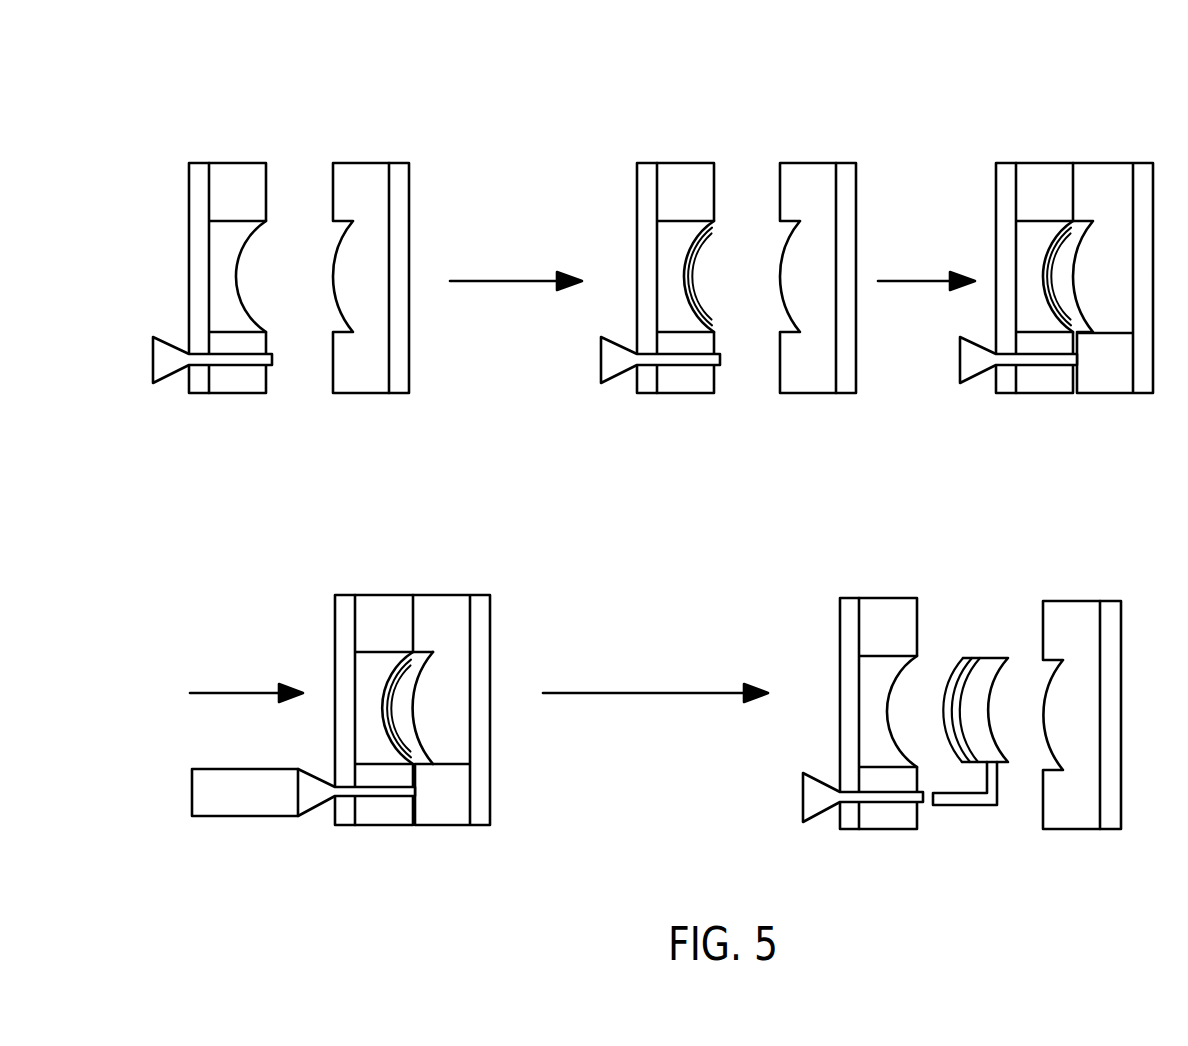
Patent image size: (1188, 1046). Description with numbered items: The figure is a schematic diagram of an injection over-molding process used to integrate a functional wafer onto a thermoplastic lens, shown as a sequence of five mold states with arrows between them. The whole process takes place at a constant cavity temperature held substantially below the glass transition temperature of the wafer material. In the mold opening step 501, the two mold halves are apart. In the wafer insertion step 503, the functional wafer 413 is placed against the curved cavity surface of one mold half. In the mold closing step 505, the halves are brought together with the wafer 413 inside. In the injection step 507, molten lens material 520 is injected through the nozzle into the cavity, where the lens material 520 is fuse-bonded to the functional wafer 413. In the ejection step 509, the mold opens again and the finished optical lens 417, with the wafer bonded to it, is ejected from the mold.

The mold opening step 501 is at (293, 63).
The wafer insertion step 503 is at (732, 63).
The mold closing step 505 is at (1122, 63).
The injection step 507 is at (417, 553).
The ejection step 509 is at (998, 553).
The functional wafer 413 is at (685, 272).
The lens material 520 is at (413, 733).
The optical lens 417 is at (993, 637).